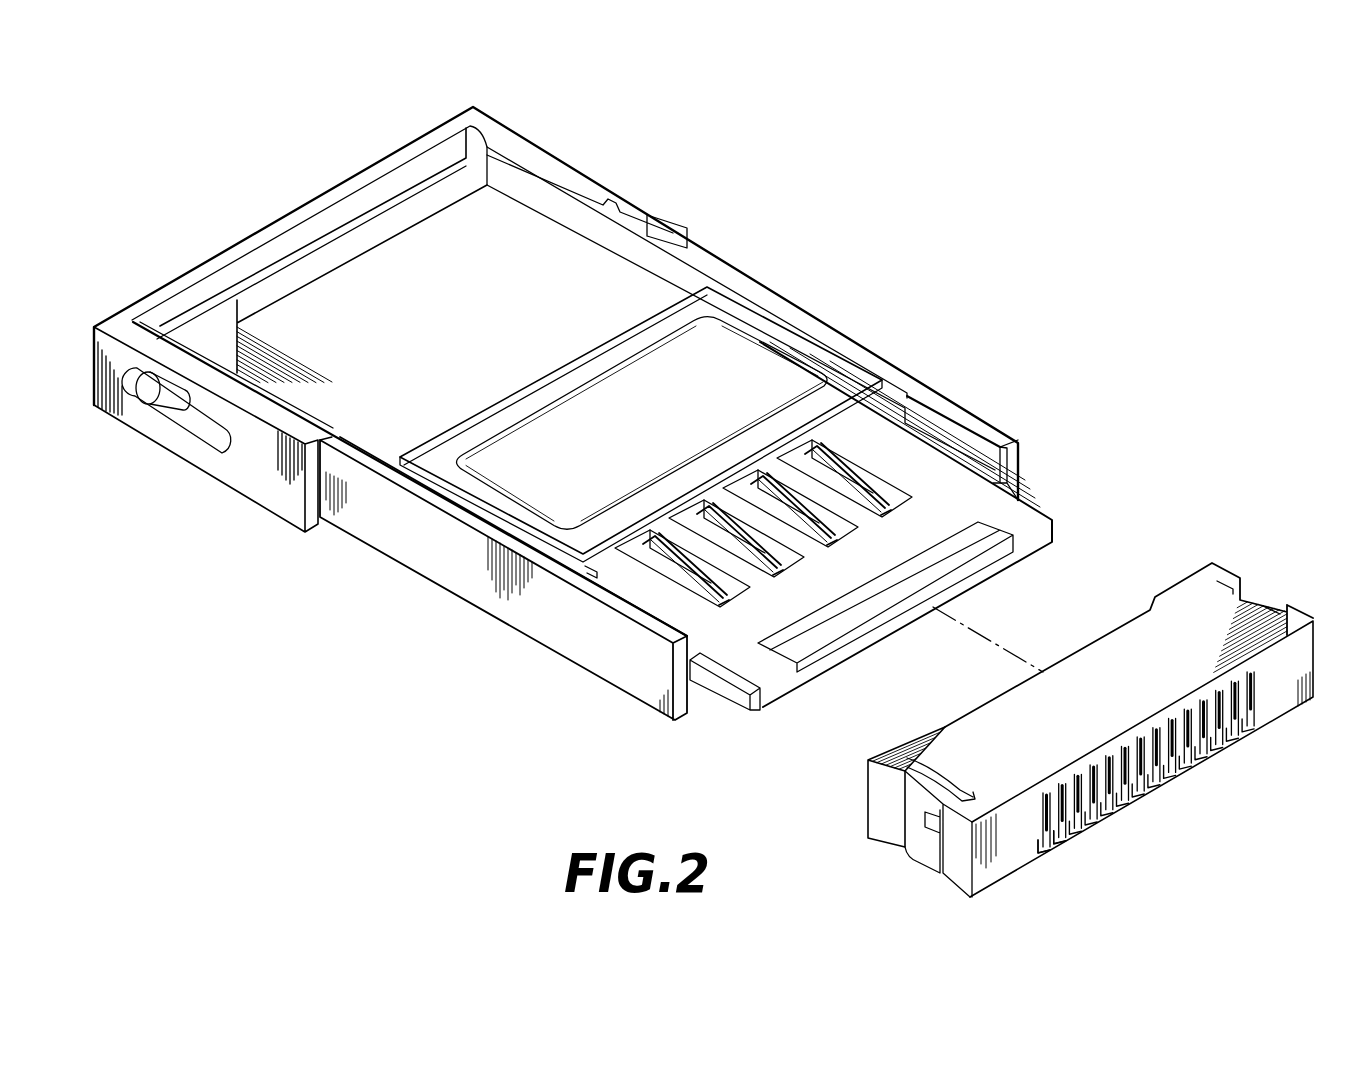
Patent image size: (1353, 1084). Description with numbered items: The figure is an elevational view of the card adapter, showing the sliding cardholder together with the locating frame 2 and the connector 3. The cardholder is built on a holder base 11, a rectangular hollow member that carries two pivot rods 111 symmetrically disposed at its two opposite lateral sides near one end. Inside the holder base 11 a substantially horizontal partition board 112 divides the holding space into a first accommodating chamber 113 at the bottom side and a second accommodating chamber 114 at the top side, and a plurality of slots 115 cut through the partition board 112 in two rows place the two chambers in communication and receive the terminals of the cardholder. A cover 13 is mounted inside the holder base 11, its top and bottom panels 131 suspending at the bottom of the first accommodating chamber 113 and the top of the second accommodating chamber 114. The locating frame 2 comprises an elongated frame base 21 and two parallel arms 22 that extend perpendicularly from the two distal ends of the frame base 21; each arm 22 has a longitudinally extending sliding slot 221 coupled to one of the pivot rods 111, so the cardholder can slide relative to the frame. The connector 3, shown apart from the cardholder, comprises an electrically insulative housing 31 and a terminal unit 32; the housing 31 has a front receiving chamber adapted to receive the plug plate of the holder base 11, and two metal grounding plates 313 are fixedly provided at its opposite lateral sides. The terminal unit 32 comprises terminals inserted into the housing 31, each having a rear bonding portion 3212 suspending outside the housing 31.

The locating frame 2 is at (556, 349).
The elongated frame base 21 is at (360, 200).
The arms 22 is at (206, 437).
The sliding slot 221 is at (200, 440).
The holder base 11 is at (574, 482).
The pivot rods 111 is at (145, 397).
The partition board 112 is at (363, 402).
The first accommodating chamber 113 is at (725, 707).
The second accommodating chamber 114 is at (330, 297).
The slots 115 is at (803, 457).
The cover 13 is at (641, 359).
The top and bottom panels 131 is at (655, 327).
The connector 3 is at (1095, 700).
The housing 31 is at (1278, 692).
The terminal unit 32 is at (1134, 789).
The metal grounding plates 313 is at (932, 822).
The rear bonding portion 3212 is at (1045, 850).